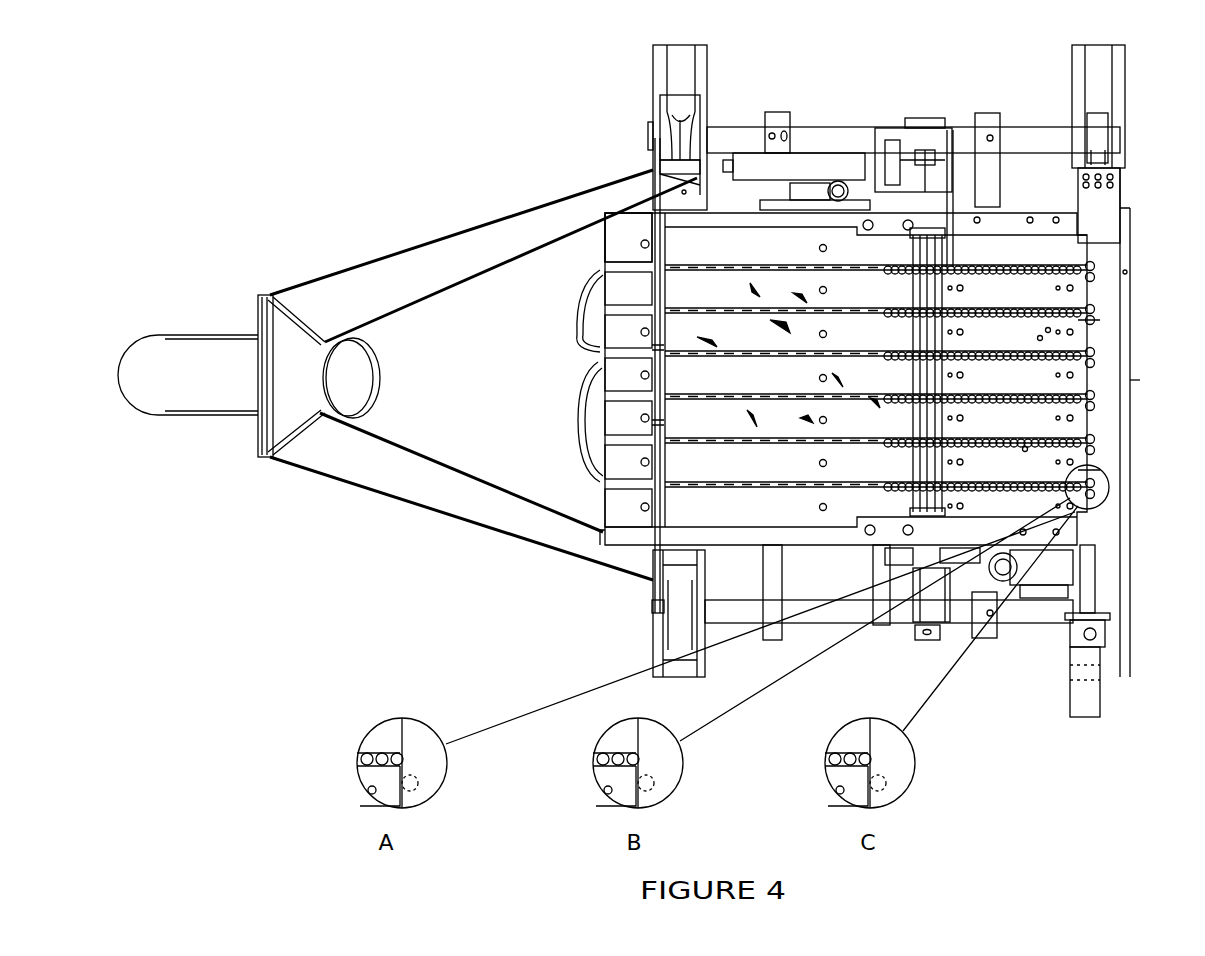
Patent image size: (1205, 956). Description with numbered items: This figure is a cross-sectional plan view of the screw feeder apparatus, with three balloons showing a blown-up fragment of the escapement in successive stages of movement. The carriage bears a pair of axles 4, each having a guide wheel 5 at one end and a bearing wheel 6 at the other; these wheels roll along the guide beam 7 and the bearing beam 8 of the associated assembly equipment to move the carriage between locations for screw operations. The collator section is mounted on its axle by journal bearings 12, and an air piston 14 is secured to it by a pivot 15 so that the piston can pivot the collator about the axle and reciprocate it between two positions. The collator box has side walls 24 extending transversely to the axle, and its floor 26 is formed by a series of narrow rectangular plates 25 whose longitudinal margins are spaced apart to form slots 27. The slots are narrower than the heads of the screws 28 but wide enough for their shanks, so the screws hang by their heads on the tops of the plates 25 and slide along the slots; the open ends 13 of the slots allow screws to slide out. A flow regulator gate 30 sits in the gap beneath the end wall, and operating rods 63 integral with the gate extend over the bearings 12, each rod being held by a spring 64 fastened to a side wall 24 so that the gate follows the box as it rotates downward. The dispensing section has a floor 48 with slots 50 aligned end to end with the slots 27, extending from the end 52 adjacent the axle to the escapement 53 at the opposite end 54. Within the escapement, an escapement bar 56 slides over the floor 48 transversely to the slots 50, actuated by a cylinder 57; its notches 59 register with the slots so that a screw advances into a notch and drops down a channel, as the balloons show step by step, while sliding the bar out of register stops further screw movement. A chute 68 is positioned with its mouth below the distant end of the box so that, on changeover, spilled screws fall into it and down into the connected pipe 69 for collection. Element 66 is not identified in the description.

The axle 4 is at (1040, 126).
The guide wheel 5 is at (690, 118).
The bearing wheel 6 is at (1095, 135).
The guide beam 7 is at (653, 72).
The bearing beam 8 is at (1075, 72).
The journal bearing 12 is at (645, 290).
The slot end 13 is at (587, 376).
The air piston 14 is at (853, 186).
The pivot 15 is at (817, 176).
The side wall 24 is at (755, 220).
The plate 25 is at (828, 250).
The floor 26 is at (712, 320).
The slot 27 is at (745, 478).
The screw 28 is at (372, 748).
The flow regulator gate 30 is at (1040, 335).
The floor 48 is at (1078, 330).
The slot 50 is at (1048, 334).
The end 52 is at (1022, 447).
The escapement 53 is at (1115, 292).
The end 54 is at (1132, 392).
The escapement bar 56 is at (769, 456).
The cylinder 57 is at (1082, 718).
The escapement notch 59 is at (418, 777).
The operating rod 63 is at (960, 130).
The spring 64 is at (905, 190).
The coupling 66 is at (922, 125).
The chute 68 is at (428, 372).
The pipe 69 is at (190, 370).